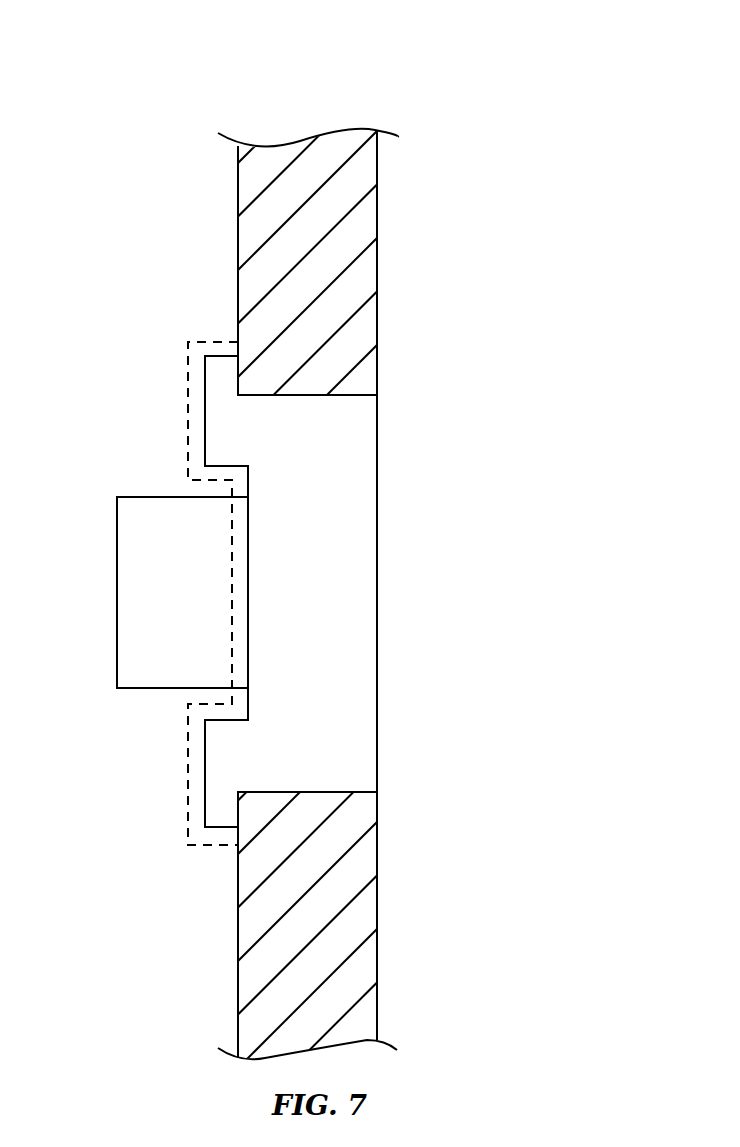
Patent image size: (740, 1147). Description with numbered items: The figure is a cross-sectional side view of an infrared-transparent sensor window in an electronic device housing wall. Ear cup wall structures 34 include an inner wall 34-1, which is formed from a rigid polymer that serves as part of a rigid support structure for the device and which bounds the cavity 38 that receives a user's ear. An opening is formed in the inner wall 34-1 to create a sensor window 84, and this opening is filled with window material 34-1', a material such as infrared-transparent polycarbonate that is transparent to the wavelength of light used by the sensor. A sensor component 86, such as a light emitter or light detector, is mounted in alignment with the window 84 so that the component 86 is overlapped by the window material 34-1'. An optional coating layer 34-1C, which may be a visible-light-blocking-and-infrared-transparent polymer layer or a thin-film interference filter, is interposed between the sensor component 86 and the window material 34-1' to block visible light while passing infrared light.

The ear cup wall structures 34 is at (367, 75).
The inner wall 34-1 is at (297, 593).
The window material 34-1' is at (407, 593).
The sensor window 84 is at (392, 431).
The cavity 38 is at (513, 357).
The coating layer 34-1C is at (188, 402).
The sensor component 86 is at (127, 603).